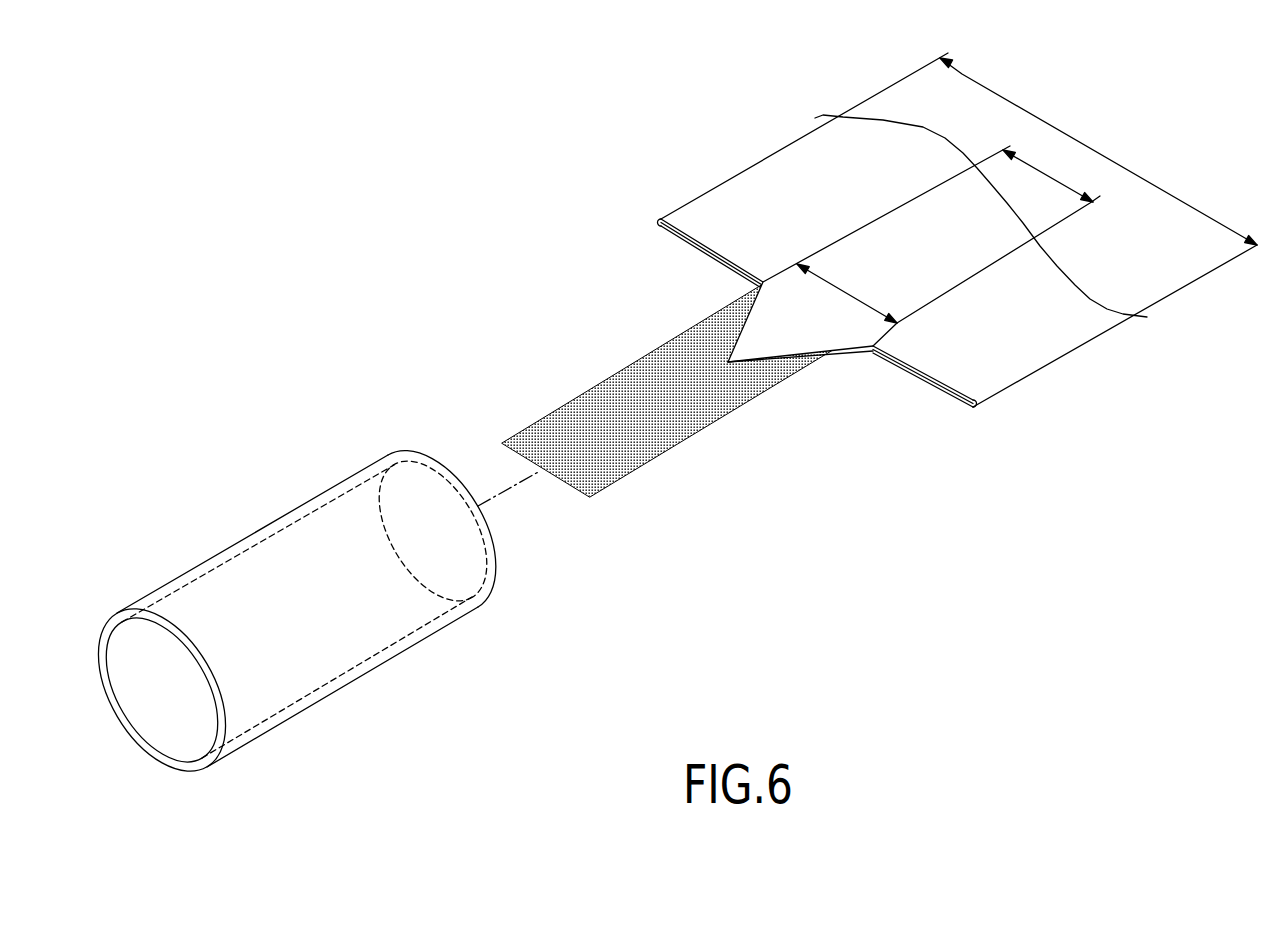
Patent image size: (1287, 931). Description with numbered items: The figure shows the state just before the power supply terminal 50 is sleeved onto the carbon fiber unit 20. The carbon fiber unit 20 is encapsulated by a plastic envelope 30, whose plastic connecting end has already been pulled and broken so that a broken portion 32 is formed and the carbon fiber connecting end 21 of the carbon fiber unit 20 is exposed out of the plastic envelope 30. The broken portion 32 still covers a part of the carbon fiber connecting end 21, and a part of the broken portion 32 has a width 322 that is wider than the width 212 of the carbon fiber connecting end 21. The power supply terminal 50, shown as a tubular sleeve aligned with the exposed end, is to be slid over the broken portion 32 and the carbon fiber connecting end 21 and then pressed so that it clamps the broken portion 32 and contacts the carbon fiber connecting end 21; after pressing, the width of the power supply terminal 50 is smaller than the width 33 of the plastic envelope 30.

The carbon fiber unit 20 is at (664, 395).
The carbon fiber connecting end 21 is at (695, 407).
The width of the carbon fiber connecting end 212 is at (1058, 180).
The plastic envelope 30 is at (958, 250).
The broken portion 32 is at (783, 338).
The width of the broken portion 322 is at (848, 291).
The width of the plastic envelope 33 is at (1183, 197).
The power supply terminal 50 is at (292, 510).